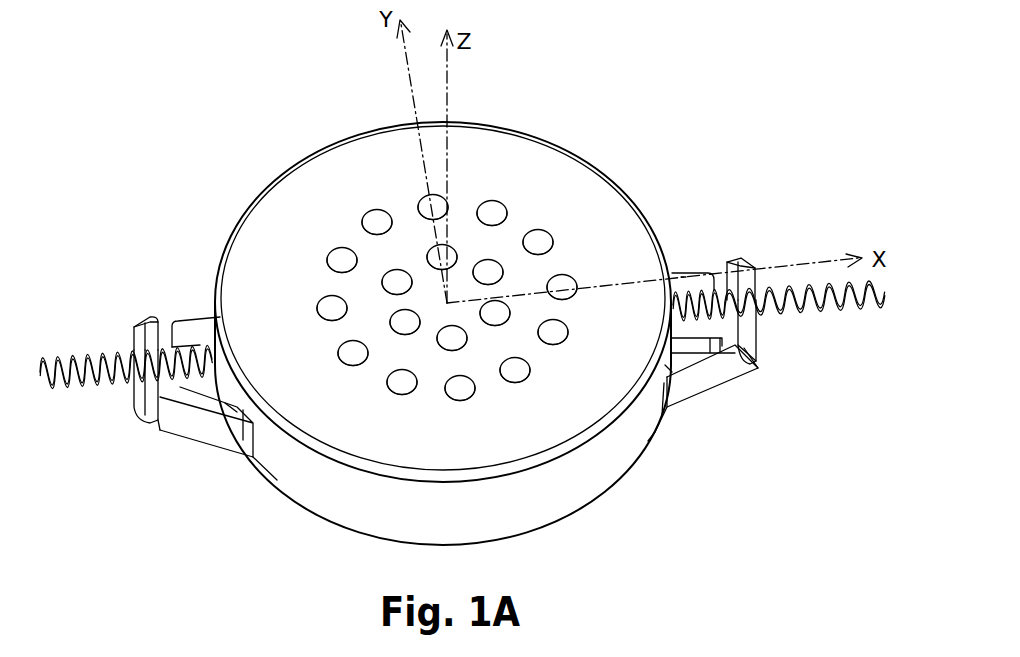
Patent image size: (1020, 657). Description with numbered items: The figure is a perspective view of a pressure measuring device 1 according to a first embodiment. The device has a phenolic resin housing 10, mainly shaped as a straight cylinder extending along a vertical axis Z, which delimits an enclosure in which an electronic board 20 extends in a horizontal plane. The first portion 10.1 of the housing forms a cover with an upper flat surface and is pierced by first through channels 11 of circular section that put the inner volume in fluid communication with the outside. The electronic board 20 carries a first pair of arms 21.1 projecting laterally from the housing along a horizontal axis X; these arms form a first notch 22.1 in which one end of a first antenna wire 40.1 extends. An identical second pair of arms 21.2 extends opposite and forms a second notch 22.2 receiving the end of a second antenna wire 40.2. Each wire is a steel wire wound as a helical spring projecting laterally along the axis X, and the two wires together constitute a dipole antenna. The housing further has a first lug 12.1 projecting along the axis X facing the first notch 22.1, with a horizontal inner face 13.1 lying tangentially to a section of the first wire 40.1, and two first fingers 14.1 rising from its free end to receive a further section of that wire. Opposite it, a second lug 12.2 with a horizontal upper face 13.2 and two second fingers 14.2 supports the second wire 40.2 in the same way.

The pressure measuring device 1 is at (686, 77).
The housing 10 is at (530, 135).
The first portion of the housing 10.1 is at (625, 226).
The first through channels 11 is at (366, 222).
The first lug 12.1 is at (675, 395).
The second lug 12.2 is at (227, 440).
The inner face 13.1 is at (670, 372).
The upper face 13.2 is at (240, 410).
The first fingers 14.1 is at (748, 262).
The second fingers 14.2 is at (140, 317).
The electronic board 20 is at (688, 272).
The first pair of arms 21.1 is at (727, 268).
The second pair of arms 21.2 is at (183, 321).
The first notch 22.1 is at (752, 364).
The second notch 22.2 is at (146, 428).
The first antenna wire 40.1 is at (866, 312).
The second antenna wire 40.2 is at (62, 356).